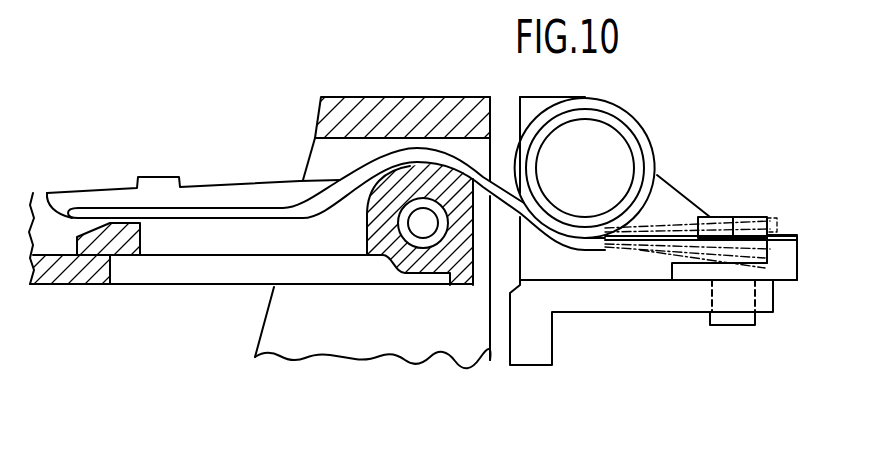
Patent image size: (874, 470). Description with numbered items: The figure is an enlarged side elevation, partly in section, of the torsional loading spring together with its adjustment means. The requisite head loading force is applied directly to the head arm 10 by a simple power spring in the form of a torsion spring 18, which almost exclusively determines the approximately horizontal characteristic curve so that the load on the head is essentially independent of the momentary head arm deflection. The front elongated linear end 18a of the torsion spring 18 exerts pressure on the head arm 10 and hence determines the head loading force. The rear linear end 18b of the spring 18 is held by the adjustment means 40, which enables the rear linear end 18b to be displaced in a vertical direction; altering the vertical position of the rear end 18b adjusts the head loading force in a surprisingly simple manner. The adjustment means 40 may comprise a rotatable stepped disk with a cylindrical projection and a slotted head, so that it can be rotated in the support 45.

The head arm 10 is at (368, 92).
The torsion spring 18 is at (636, 109).
The front elongated linear end 18a is at (193, 212).
The rear linear end 18b is at (773, 220).
The adjustment means 40 is at (785, 270).
The support 45 is at (682, 303).